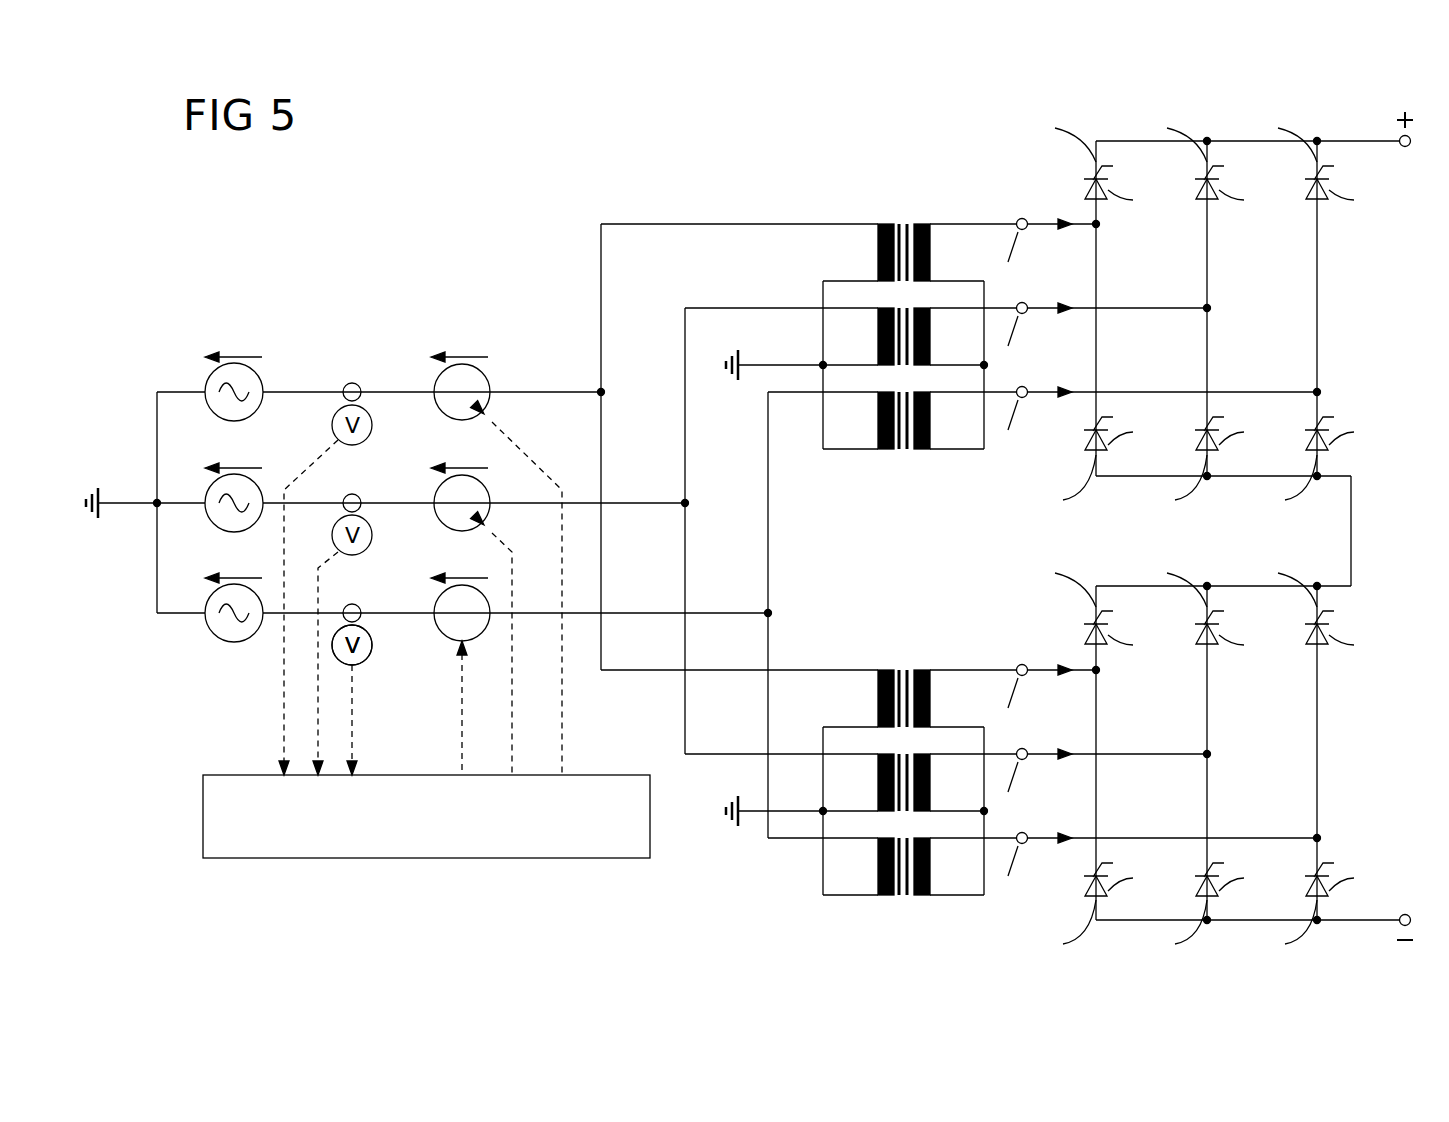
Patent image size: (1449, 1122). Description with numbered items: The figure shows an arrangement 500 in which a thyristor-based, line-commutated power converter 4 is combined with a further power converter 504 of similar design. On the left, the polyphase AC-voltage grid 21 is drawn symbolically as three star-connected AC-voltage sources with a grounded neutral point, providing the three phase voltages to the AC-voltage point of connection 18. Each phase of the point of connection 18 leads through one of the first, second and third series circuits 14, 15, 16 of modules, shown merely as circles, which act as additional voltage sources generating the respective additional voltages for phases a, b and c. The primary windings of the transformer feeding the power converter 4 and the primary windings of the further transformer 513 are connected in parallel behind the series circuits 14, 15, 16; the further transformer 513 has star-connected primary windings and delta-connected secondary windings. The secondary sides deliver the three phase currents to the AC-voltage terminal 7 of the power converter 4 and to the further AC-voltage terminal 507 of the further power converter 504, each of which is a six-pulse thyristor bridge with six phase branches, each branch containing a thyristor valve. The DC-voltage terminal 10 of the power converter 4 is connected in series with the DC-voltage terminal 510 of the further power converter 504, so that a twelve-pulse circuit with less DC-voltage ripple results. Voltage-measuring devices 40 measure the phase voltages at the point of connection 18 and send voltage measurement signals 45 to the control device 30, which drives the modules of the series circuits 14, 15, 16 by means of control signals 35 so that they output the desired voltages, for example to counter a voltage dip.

The polyphase AC-voltage grid 21 is at (195, 336).
The AC-voltage point of connection 18 is at (346, 350).
The first series circuit of modules 14 is at (487, 371).
The second series circuit of modules 15 is at (487, 483).
The third series circuit of modules 16 is at (487, 598).
The control device 30 is at (203, 825).
The voltage measurement signals 45 is at (284, 705).
The voltage-measuring devices 40 is at (365, 656).
The control signals 35 is at (562, 690).
The arrangement 500 is at (822, 165).
The AC-voltage terminal 7 is at (1011, 211).
The power converter 4 is at (1207, 125).
The DC-voltage terminal 10 is at (1226, 315).
The further transformer 513 is at (896, 645).
The further AC-voltage terminal 507 is at (1001, 648).
The further power converter 504 is at (1206, 572).
The DC-voltage terminal of the further power converter 510 is at (1227, 733).